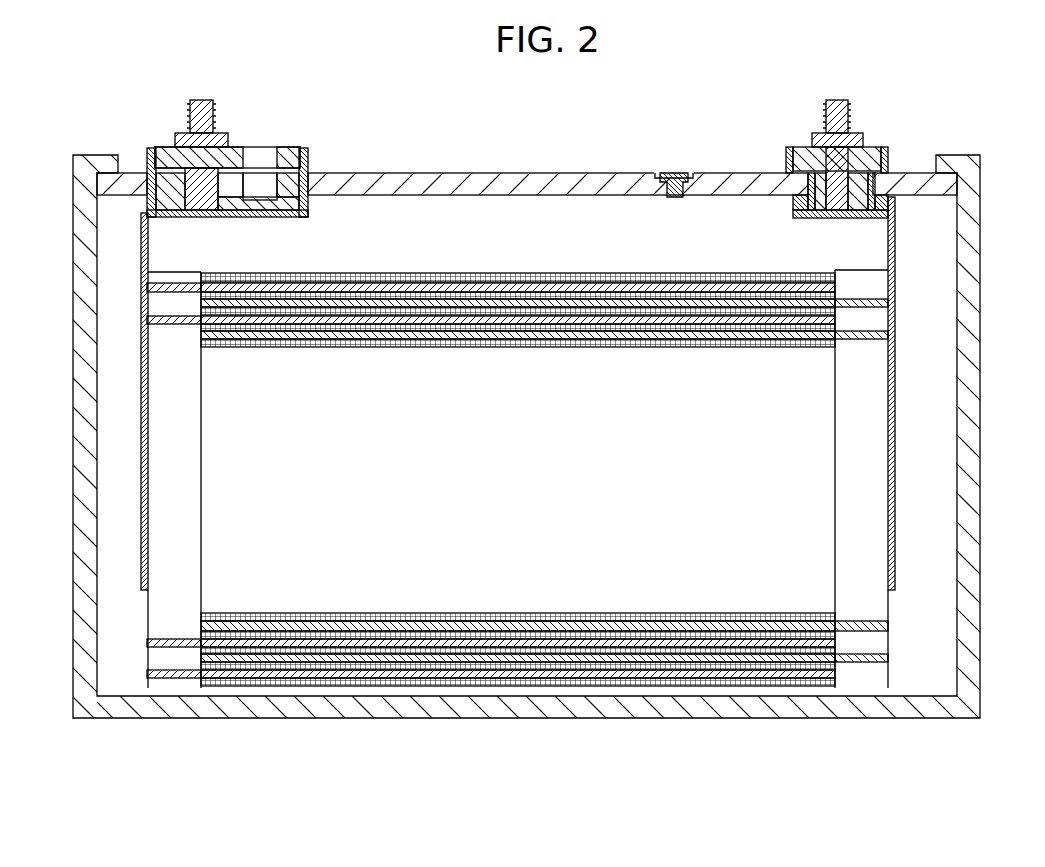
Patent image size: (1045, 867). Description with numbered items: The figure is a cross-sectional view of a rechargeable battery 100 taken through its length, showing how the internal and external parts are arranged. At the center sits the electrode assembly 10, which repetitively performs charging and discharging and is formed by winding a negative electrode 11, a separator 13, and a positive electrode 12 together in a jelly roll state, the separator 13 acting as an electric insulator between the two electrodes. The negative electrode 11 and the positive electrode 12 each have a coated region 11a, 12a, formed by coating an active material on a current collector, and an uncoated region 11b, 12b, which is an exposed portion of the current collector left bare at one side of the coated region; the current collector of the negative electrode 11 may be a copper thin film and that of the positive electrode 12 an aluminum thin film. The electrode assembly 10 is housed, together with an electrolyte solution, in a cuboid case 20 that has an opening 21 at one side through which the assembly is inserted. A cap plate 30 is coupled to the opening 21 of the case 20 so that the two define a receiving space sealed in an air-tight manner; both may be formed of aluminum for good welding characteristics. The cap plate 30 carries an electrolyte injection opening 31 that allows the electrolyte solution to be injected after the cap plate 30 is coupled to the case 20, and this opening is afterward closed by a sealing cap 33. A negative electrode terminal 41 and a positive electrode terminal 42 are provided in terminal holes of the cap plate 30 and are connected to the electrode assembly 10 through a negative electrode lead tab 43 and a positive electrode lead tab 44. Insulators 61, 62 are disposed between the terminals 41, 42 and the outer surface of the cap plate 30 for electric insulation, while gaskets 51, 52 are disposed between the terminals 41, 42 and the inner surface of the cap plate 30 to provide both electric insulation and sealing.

The rechargeable battery 100 is at (560, 95).
The electrode assembly 10 is at (517, 535).
The negative electrode 11 is at (491, 542).
The coated region of the negative electrode 11a is at (272, 678).
The uncoated region of the negative electrode 11b is at (184, 523).
The positive electrode 12 is at (544, 550).
The coated region of the positive electrode 12a is at (765, 662).
The uncoated region of the positive electrode 12b is at (848, 662).
The separator 13 is at (500, 680).
The case 20 is at (557, 415).
The opening 21 is at (113, 170).
The cap plate 30 is at (527, 156).
The electrolyte injection opening 31 is at (660, 175).
The sealing cap 33 is at (676, 173).
The negative electrode terminal 41 is at (170, 149).
The positive electrode terminal 42 is at (886, 155).
The negative electrode lead tab 43 is at (141, 395).
The positive electrode lead tab 44 is at (895, 520).
The gasket 51 is at (148, 203).
The gasket 52 is at (895, 200).
The insulator 61 is at (150, 150).
The insulator 62 is at (892, 158).